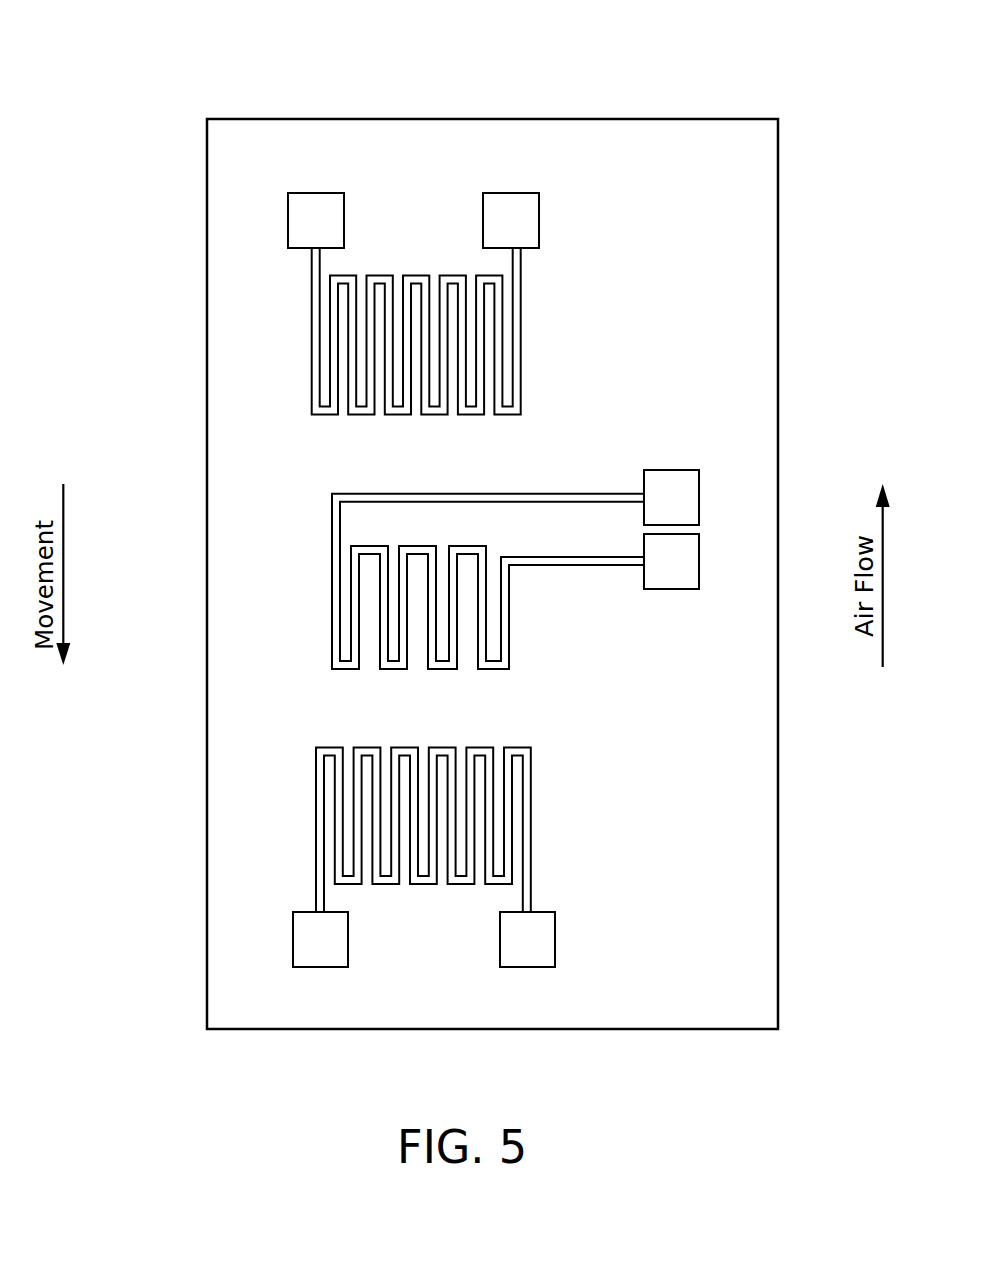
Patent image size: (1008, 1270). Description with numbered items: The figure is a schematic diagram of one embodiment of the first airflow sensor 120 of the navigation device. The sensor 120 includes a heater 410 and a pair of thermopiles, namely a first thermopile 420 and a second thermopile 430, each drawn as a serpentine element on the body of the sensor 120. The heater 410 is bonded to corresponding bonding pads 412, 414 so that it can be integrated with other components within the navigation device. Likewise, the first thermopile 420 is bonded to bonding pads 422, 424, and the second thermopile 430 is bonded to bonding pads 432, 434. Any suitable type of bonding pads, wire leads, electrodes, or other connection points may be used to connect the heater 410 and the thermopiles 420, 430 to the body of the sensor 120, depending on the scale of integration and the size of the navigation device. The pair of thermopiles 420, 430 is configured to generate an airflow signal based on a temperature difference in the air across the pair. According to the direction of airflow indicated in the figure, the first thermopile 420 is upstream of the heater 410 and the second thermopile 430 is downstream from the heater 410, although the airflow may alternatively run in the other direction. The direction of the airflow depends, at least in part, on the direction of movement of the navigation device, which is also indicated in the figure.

The first airflow sensor 120 is at (292, 119).
The heater 410 is at (332, 612).
The bonding pad 412 is at (671, 497).
The bonding pad 414 is at (671, 561).
The first thermopile 420 is at (312, 357).
The bonding pad 422 is at (316, 220).
The bonding pad 424 is at (511, 220).
The second thermopile 430 is at (315, 813).
The bonding pad 432 is at (320, 939).
The bonding pad 434 is at (527, 939).